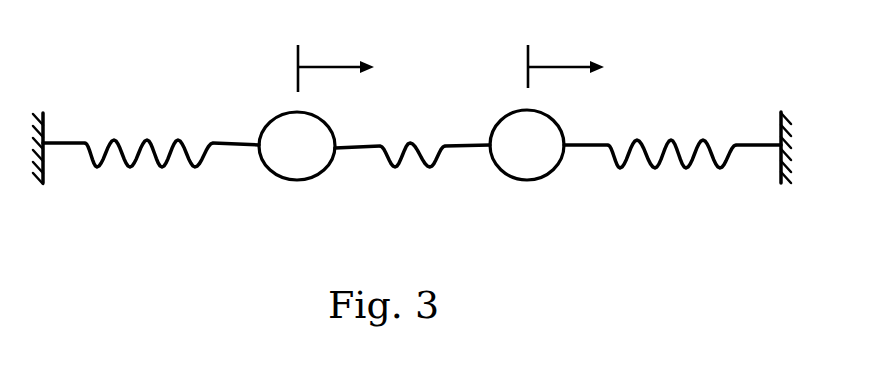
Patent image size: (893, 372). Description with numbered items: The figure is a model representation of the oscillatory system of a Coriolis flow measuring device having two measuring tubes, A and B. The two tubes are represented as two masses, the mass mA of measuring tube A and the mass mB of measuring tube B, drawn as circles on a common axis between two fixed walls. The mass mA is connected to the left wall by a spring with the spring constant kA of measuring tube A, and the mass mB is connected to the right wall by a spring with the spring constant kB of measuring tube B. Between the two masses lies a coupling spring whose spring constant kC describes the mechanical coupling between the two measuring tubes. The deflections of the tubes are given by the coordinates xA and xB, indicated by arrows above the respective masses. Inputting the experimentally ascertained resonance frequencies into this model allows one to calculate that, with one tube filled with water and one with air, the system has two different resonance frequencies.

The spring constant of measuring tube A kA is at (149, 189).
The mass of measuring tube A mA is at (297, 175).
The coupling spring constant kC is at (412, 191).
The mass of measuring tube B mB is at (527, 174).
The spring constant of measuring tube B kB is at (672, 189).
The deflection of measuring tube A xA is at (336, 52).
The deflection of measuring tube B xB is at (566, 50).